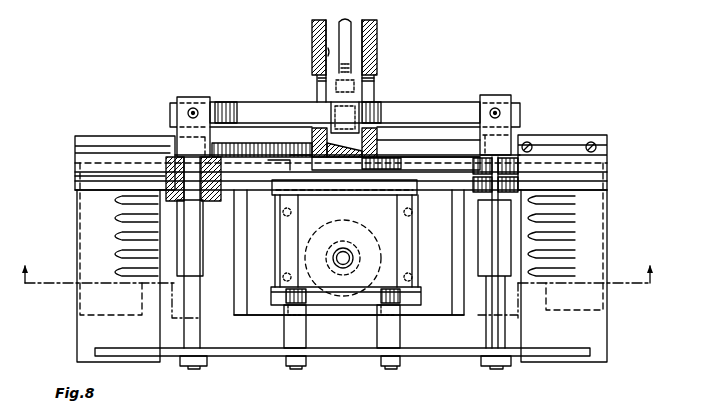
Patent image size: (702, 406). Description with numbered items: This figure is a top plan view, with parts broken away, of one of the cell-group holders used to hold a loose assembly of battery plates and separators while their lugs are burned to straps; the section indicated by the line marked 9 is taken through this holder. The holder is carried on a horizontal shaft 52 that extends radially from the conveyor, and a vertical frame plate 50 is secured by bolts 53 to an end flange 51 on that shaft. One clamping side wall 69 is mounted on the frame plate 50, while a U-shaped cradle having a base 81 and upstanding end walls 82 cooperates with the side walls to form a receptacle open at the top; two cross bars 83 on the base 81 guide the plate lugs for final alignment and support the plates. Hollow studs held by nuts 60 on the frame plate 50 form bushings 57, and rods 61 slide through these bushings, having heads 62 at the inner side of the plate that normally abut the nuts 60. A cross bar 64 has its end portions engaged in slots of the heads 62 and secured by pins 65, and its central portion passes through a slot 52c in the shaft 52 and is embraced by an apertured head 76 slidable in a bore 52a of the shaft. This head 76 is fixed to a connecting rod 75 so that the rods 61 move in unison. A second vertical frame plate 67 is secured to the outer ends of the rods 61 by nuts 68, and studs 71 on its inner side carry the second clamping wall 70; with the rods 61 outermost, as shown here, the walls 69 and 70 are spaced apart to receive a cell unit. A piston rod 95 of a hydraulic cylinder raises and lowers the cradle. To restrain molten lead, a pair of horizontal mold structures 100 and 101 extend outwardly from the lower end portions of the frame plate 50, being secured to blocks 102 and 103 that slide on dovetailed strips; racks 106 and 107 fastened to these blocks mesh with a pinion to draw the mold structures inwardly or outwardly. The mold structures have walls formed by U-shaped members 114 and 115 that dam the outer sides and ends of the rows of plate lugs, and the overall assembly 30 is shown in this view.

The mounting assembly 30 is at (437, 320).
The vertical frame plate 50 is at (74, 176).
The end flange 51 is at (401, 170).
The horizontal shaft 52 is at (383, 47).
The bore 52a is at (330, 52).
The slot 52c is at (318, 90).
The bolts 53 is at (272, 147).
The bushings 57 is at (344, 252).
The nuts 60 is at (168, 160).
The rods 61 is at (200, 318).
The heads 62 is at (190, 97).
The cross bar 64 is at (345, 114).
The pins 65 is at (188, 113).
The vertical frame plate 67 is at (258, 350).
The nuts 68 is at (188, 366).
The side wall 69 is at (337, 212).
The side wall 70 is at (368, 300).
The studs 71 is at (342, 326).
The connecting rod 75 is at (345, 37).
The apertured head 76 is at (344, 129).
The base 81 is at (258, 307).
The end walls 82 is at (240, 266).
The cross bars 83 is at (293, 224).
The piston rod 95 is at (360, 253).
The mold structure 100 is at (119, 250).
The mold structure 101 is at (565, 251).
The block 102 is at (72, 146).
The block 103 is at (610, 141).
The rack 106 is at (235, 143).
The rack 107 is at (446, 150).
The U-shaped member 114 is at (85, 315).
The U-shaped member 115 is at (588, 310).
The section line 9- 9 is at (337, 261).